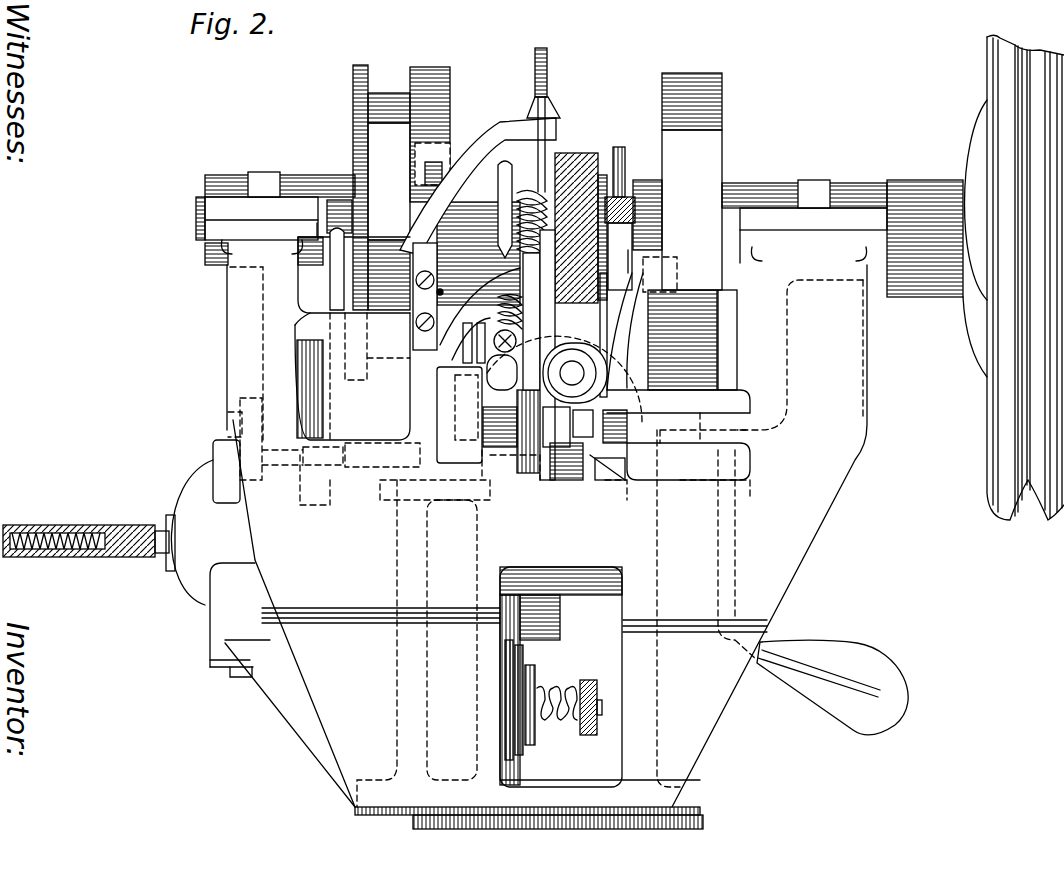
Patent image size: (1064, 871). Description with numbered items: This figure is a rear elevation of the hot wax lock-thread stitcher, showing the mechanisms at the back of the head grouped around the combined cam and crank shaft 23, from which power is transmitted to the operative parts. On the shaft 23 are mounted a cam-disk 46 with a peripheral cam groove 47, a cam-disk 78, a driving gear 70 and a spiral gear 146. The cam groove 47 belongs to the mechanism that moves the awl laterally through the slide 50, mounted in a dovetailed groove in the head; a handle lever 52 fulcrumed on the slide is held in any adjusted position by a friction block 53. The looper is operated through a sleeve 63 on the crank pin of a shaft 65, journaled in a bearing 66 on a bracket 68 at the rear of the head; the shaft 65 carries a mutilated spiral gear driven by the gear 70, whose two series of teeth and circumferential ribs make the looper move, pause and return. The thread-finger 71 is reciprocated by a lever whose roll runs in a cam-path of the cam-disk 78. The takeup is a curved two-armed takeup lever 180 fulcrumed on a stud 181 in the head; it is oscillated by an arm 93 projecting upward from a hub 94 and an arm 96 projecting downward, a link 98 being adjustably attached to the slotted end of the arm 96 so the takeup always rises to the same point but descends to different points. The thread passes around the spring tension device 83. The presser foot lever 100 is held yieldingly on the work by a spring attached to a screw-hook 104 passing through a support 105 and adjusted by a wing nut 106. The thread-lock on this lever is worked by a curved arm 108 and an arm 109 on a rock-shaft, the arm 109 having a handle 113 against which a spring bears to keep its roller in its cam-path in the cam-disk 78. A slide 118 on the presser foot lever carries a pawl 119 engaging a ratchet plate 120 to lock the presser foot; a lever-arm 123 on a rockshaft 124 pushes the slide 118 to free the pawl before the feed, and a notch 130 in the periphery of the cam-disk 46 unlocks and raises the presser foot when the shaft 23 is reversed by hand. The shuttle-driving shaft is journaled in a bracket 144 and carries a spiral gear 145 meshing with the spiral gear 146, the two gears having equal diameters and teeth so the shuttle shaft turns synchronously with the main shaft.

The combined cam and crank shaft 23 is at (196, 212).
The cam-disk 46 is at (435, 67).
The peripheral cam groove 47 is at (381, 187).
The slide 50 is at (200, 480).
The handle lever 52 is at (85, 515).
The friction block 53 is at (168, 522).
The sleeve 63 is at (635, 472).
The shaft 65 is at (628, 197).
The bearing 66 is at (625, 445).
The bracket 68 is at (605, 323).
The driving gear 70 is at (623, 160).
The thread-finger 71 is at (660, 264).
The cam-disk 78 is at (692, 73).
The spring tension device 83 is at (550, 685).
The arm 93 is at (503, 197).
The hub 94 is at (437, 297).
The arm 96 is at (530, 368).
The link 98 is at (573, 472).
The presser foot lever 100 is at (483, 410).
The screw-hook 104 is at (548, 58).
The support 105 is at (478, 186).
The wing nut 106 is at (549, 108).
The curved arm 108 is at (560, 604).
The arm 109 is at (735, 323).
The handle 113 is at (855, 650).
The slide 118 is at (490, 338).
The pawl 119 is at (480, 353).
The ratchet plate 120 is at (459, 416).
The lever-arm 123 is at (455, 405).
The rockshaft 124 is at (272, 465).
The notch 130 is at (425, 170).
The bracket 144 is at (598, 390).
The spiral gear 145 is at (564, 373).
The spiral gear 146 is at (586, 153).
The curved two-armed takeup lever 180 is at (560, 623).
The stud 181 is at (452, 520).